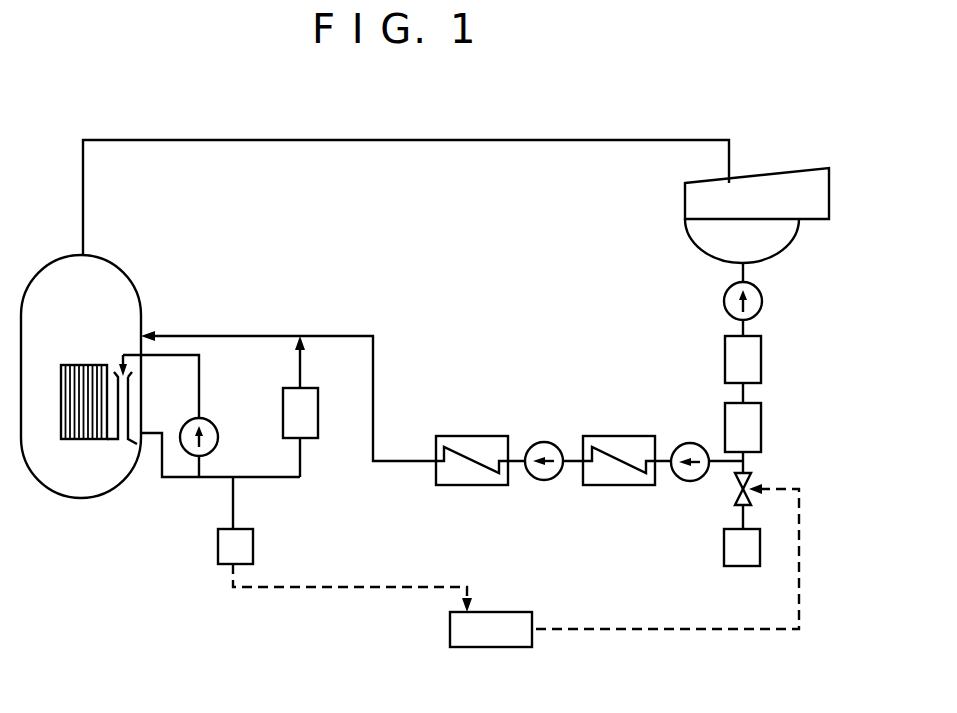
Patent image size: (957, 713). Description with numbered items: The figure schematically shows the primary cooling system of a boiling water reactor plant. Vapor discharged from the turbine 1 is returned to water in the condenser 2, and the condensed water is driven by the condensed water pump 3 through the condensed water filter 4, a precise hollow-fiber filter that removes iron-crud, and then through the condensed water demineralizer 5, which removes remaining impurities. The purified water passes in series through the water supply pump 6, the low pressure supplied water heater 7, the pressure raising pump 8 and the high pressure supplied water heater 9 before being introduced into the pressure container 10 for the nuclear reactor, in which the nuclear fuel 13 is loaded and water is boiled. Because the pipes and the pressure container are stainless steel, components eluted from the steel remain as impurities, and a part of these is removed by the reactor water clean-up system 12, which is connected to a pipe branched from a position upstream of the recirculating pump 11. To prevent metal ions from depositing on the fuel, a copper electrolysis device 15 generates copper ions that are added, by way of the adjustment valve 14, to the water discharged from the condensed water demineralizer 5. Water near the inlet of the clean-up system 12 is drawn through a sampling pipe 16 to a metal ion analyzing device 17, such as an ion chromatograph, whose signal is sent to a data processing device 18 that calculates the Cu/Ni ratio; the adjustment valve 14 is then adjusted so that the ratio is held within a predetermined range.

The turbine 1 is at (797, 170).
The condenser 2 is at (797, 229).
The condensed water pump 3 is at (764, 301).
The condensed water filter 4 is at (762, 362).
The condensed water demineralizer 5 is at (762, 420).
The water supply pump 6 is at (680, 444).
The low pressure supplied water heater 7 is at (599, 436).
The pressure raising pump 8 is at (530, 442).
The high pressure supplied water heater 9 is at (441, 436).
The pressure container 10 is at (120, 269).
The recirculating pump 11 is at (214, 422).
The reactor water clean-up system 12 is at (318, 401).
The nuclear fuel 13 is at (92, 365).
The adjustment valve 14 is at (724, 538).
The copper electrolysis device 15 is at (758, 481).
The sampling pipe 16 is at (233, 503).
The metal ion analyzing device 17 is at (253, 548).
The data processing device 18 is at (511, 612).